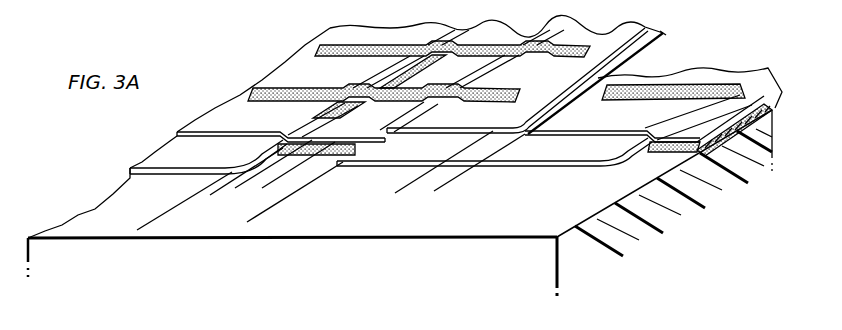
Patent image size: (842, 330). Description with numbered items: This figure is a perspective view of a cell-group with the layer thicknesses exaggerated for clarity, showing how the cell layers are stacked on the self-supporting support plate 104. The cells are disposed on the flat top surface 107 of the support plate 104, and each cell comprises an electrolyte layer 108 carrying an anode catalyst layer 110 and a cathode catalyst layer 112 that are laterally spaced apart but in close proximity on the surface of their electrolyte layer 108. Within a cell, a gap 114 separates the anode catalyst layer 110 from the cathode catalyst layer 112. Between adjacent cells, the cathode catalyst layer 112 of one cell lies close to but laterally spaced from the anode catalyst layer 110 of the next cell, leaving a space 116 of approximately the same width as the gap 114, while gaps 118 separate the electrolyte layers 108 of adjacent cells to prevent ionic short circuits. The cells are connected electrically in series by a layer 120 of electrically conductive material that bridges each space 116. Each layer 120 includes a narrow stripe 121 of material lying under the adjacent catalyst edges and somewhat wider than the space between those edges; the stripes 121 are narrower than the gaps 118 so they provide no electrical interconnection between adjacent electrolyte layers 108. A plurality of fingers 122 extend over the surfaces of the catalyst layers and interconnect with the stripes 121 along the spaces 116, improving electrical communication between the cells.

The support plate 104 is at (305, 265).
The flat top surface 107 is at (113, 193).
The electrolyte layer 108 is at (213, 167).
The anode catalyst layer 110 is at (456, 125).
The cathode catalyst layer 112 is at (233, 133).
The gap 114 is at (408, 185).
The space 116 is at (248, 180).
The gap 118 is at (150, 222).
The layer of electrically conductive material 120 is at (386, 75).
The stripe 121 is at (348, 128).
The finger 122 is at (300, 88).